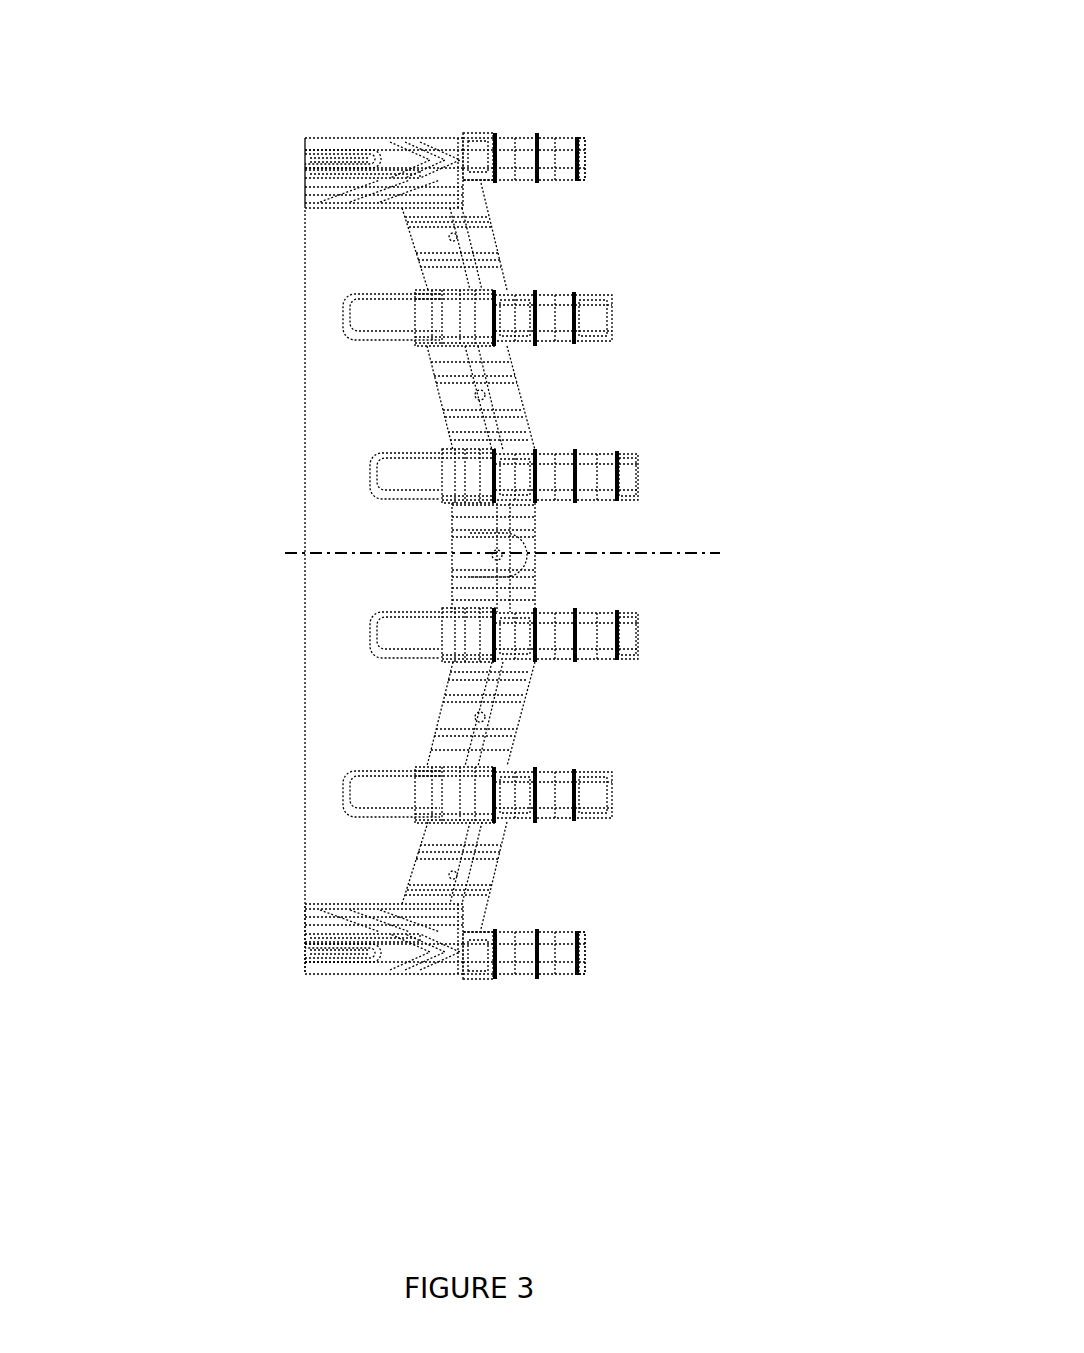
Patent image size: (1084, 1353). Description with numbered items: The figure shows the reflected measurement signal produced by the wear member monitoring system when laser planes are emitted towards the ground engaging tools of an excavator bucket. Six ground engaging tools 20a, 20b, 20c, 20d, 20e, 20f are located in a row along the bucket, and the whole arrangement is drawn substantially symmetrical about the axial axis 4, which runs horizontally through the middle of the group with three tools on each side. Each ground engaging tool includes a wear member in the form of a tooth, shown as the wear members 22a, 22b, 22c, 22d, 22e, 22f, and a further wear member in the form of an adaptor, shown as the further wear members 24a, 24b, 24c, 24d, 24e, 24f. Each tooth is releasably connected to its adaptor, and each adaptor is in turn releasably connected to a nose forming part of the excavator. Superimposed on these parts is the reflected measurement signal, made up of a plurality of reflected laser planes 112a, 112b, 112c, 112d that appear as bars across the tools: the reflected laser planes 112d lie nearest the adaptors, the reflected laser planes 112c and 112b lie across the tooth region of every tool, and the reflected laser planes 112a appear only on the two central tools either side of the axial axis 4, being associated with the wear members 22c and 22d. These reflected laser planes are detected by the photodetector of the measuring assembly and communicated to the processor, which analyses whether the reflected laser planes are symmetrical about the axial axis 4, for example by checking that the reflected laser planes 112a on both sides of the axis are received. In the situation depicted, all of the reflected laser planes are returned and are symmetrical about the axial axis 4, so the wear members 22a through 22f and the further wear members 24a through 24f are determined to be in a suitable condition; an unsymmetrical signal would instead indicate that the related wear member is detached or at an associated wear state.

The axial axis 4 is at (720, 553).
The ground engaging tool 20a is at (516, 124).
The ground engaging tool 20b is at (515, 316).
The ground engaging tool 20c is at (617, 466).
The ground engaging tool 20d is at (619, 646).
The ground engaging tool 20e is at (543, 802).
The ground engaging tool 20f is at (554, 981).
The wear member 22a is at (583, 138).
The wear member 22b is at (602, 300).
The wear member 22c is at (633, 463).
The wear member 22d is at (633, 647).
The wear member 22e is at (600, 812).
The wear member 22f is at (582, 967).
The further wear member 24a is at (470, 147).
The further wear member 24b is at (510, 328).
The further wear member 24c is at (523, 462).
The further wear member 24d is at (523, 652).
The further wear member 24e is at (517, 790).
The further wear member 24f is at (473, 978).
The reflected laser plane 112a is at (620, 480).
The reflected laser plane 112b is at (577, 458).
The reflected laser plane 112c is at (537, 163).
The reflected laser plane 112d is at (493, 953).